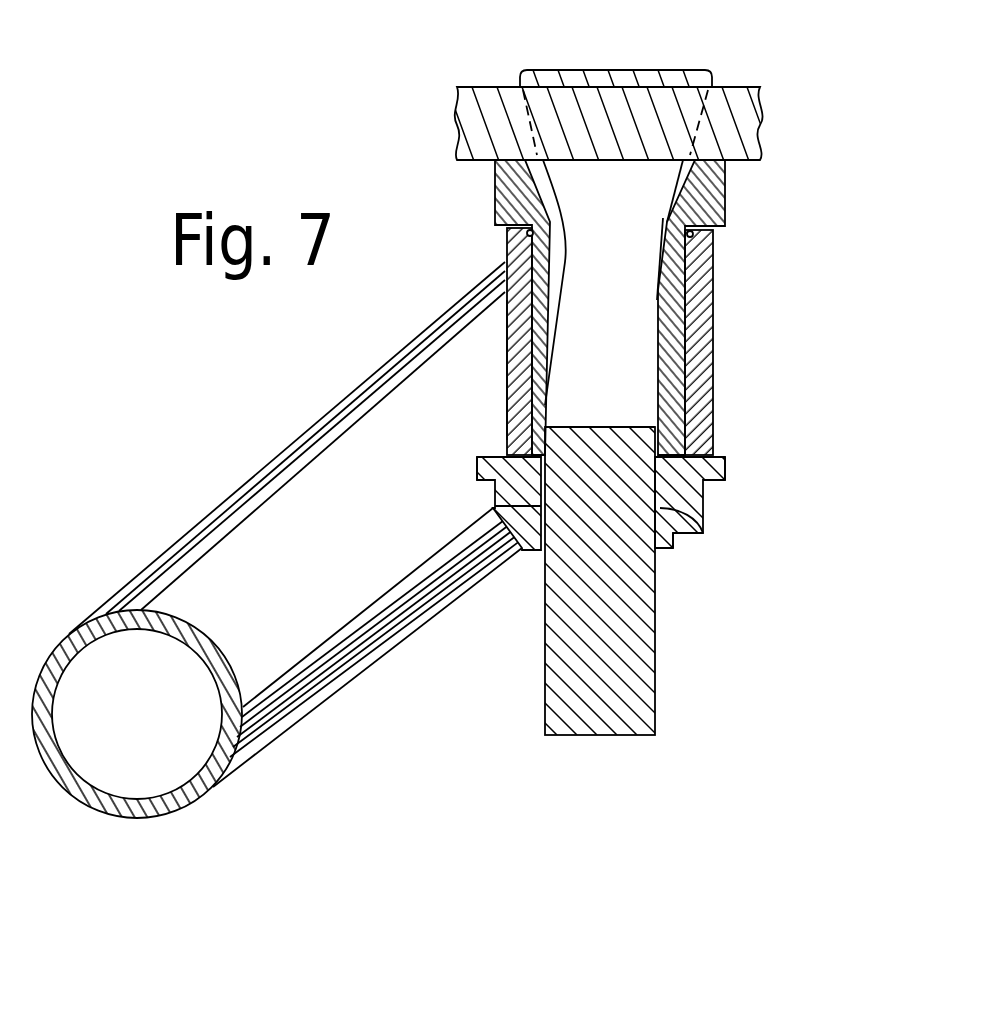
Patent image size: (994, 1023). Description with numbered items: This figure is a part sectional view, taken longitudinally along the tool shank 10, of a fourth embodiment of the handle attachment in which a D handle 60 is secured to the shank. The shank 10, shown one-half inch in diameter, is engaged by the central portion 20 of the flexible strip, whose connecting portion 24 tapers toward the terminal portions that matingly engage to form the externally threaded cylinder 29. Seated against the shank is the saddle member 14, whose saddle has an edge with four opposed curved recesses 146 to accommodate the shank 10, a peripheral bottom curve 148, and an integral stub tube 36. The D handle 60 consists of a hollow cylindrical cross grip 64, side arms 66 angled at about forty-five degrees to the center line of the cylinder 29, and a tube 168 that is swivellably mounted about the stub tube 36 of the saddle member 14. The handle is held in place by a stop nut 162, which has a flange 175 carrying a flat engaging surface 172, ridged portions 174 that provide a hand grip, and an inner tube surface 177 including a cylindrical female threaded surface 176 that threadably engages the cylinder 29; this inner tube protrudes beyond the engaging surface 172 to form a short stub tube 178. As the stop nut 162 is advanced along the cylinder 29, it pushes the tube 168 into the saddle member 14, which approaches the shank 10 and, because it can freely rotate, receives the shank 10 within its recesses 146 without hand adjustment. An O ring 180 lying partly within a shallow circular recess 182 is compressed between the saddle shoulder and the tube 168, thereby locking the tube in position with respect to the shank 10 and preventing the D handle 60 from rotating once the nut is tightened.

The tool shank 10 is at (758, 128).
The central portion 20 is at (630, 82).
The saddle member 14 is at (725, 194).
The curved recesses 146 is at (507, 160).
The peripheral bottom curve 148 is at (507, 231).
The O ring 180 is at (505, 273).
The recess 182 is at (718, 258).
The connecting portion 24 is at (625, 298).
The stub tube 36 is at (660, 363).
The stub tube 178 is at (657, 420).
The tube 168 is at (505, 368).
The cylinder 29 is at (616, 748).
The engaging surface 172 is at (720, 458).
The flange 175 is at (727, 466).
The ridged portions 174 is at (705, 512).
The female threaded surface 176 is at (680, 540).
The inner tube surface 177 is at (495, 507).
The stop nut 162 is at (521, 570).
The D handle 60 is at (352, 714).
The cross grip 64 is at (210, 797).
The side arms 66 is at (306, 601).